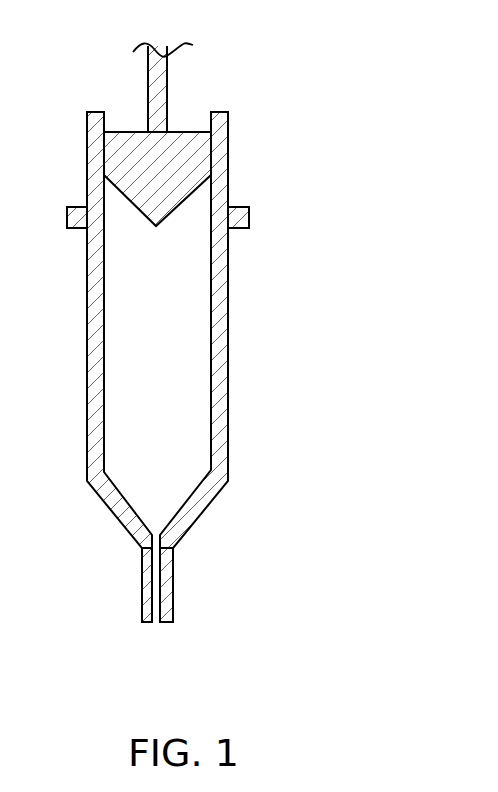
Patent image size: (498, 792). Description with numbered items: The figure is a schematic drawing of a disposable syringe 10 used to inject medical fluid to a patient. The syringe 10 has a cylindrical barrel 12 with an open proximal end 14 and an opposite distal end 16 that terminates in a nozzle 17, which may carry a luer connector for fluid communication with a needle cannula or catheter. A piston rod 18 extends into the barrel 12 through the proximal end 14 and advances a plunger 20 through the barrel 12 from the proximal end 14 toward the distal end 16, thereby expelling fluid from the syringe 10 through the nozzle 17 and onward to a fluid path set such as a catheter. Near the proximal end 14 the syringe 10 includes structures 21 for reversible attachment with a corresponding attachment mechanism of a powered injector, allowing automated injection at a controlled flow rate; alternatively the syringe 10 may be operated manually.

The disposable syringe 10 is at (312, 165).
The cylindrical barrel 12 is at (228, 318).
The open proximal end 14 is at (196, 93).
The distal end 16 is at (223, 569).
The nozzle 17 is at (165, 622).
The piston rod 18 is at (157, 75).
The plunger 20 is at (193, 157).
The structures for reversible attachment 21 is at (249, 216).